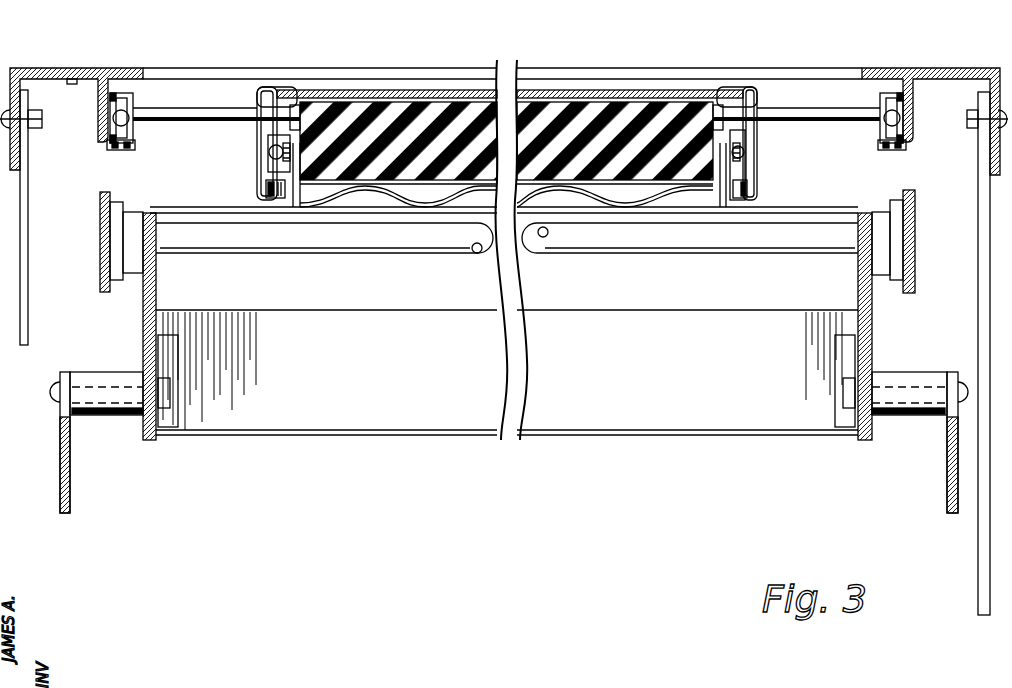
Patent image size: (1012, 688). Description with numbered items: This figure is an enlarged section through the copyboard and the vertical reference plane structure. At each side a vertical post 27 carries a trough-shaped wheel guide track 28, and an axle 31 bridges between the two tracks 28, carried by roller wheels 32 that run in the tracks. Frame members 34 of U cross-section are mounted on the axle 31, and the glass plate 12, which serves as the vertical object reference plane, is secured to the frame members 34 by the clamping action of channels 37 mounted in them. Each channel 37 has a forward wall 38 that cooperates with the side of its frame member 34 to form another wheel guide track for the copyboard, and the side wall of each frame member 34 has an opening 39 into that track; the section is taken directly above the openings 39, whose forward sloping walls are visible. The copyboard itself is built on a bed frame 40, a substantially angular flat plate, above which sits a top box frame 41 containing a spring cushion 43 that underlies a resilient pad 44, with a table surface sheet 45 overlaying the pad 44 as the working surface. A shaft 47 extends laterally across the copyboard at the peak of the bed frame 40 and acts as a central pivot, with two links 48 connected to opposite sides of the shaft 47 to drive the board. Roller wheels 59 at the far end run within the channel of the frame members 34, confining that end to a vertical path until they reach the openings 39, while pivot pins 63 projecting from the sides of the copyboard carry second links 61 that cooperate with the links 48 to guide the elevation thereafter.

The glass plate 12 is at (669, 75).
The vertical post 27 is at (100, 100).
The wheel guide track 28 is at (118, 150).
The axle 31 is at (825, 120).
The roller wheel 32 is at (132, 108).
The frame member 34 is at (748, 168).
The channel 37 is at (270, 100).
The forward wall 38 is at (258, 106).
The opening 39 is at (258, 186).
The bed frame 40 is at (765, 436).
The top box frame 41 is at (720, 208).
The spring cushion 43 is at (549, 210).
The resilient pad 44 is at (506, 143).
The table surface sheet 45 is at (600, 90).
The shaft 47 is at (692, 250).
The link 48 is at (100, 228).
The roller wheel 59 is at (268, 150).
The second link 61 is at (70, 455).
The pivot pin 63 is at (95, 378).